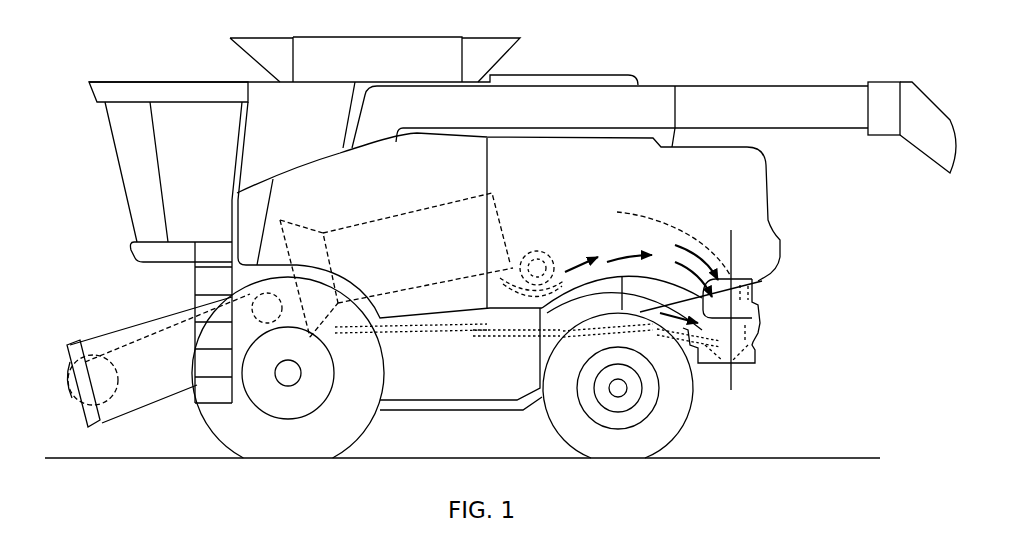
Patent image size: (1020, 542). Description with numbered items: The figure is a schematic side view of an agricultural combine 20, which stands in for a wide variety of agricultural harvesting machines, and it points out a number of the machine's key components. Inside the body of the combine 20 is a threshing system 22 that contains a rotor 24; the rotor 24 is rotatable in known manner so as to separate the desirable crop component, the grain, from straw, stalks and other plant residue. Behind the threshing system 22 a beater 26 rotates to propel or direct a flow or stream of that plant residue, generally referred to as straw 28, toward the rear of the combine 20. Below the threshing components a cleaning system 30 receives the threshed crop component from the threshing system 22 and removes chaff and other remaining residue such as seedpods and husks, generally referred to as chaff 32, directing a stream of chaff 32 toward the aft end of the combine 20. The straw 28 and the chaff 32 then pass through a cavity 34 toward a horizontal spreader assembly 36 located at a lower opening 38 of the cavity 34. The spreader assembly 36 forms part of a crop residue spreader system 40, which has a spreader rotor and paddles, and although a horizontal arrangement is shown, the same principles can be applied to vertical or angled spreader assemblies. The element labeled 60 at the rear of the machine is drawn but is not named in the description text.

The agricultural combine 20 is at (735, 53).
The threshing system 22 is at (352, 218).
The rotor 24 is at (387, 222).
The beater 26 is at (532, 252).
The straw 28 is at (577, 264).
The cleaning system 30 is at (525, 343).
The chaff 32 is at (640, 290).
The cavity 34 is at (657, 242).
The horizontal spreader assembly 36 is at (773, 352).
The lower opening 38 is at (690, 311).
The crop residue spreader system 40 is at (782, 310).
The rear hood 60 is at (793, 235).